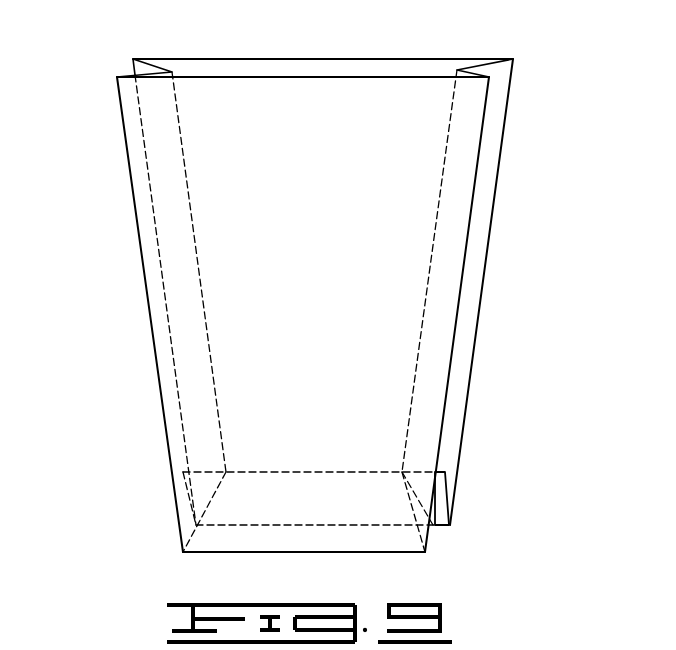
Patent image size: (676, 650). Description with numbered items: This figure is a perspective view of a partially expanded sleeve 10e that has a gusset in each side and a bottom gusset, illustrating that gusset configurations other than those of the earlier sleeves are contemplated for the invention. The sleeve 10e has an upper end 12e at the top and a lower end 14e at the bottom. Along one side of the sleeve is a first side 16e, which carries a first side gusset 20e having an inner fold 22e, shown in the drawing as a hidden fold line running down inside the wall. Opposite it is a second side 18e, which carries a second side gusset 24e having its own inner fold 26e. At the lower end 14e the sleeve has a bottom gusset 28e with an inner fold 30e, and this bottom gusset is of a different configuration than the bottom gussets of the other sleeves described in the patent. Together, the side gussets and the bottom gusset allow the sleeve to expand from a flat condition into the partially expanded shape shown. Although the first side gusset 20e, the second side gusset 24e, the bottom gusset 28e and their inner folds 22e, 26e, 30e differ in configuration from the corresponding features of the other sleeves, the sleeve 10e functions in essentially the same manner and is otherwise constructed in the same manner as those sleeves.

The sleeve 10e is at (500, 297).
The upper end 12e is at (263, 58).
The lower end 14e is at (230, 553).
The first side 16e is at (148, 292).
The second side 18e is at (490, 227).
The first side gusset 20e is at (133, 62).
The inner fold 22e is at (183, 173).
The second side gusset 24e is at (497, 112).
The inner fold 26e is at (440, 185).
The bottom gusset 28e is at (447, 492).
The inner fold 30e is at (360, 470).